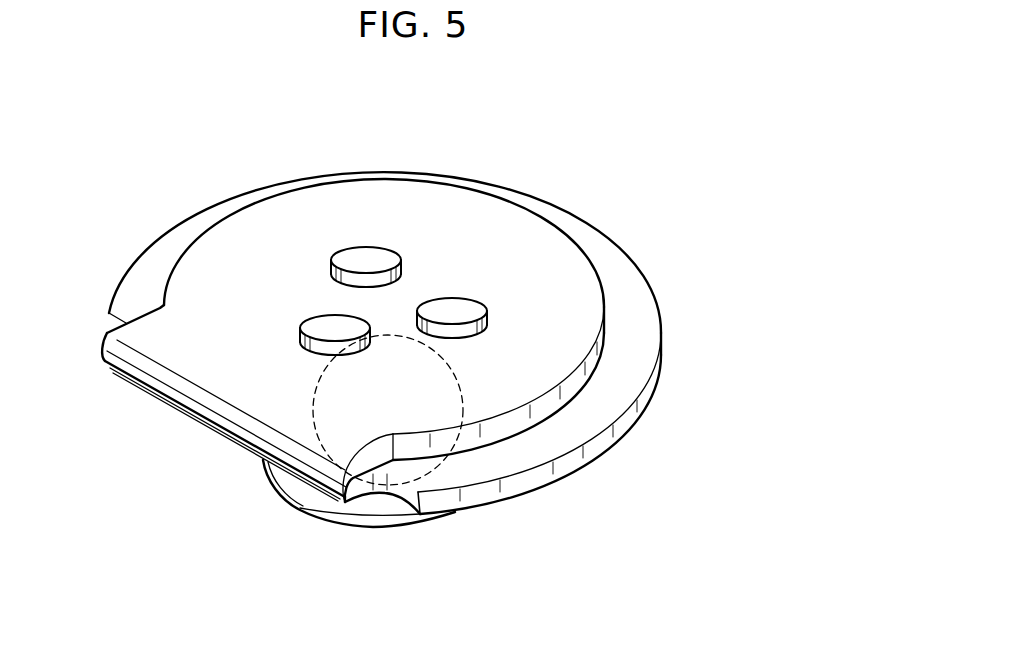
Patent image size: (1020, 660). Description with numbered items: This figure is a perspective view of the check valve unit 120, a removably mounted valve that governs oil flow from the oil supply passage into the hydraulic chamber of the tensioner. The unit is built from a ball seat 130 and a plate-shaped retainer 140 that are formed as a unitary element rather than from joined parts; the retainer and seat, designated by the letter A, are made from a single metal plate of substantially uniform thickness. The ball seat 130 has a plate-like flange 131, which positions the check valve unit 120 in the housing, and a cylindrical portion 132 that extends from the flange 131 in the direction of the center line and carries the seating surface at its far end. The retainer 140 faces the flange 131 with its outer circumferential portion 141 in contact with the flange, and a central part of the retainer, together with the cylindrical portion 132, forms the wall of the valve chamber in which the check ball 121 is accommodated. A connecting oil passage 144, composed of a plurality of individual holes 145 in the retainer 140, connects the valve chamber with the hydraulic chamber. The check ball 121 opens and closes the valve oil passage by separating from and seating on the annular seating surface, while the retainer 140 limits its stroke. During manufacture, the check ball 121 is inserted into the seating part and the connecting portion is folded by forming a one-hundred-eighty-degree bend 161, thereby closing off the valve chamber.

The check valve unit 120 is at (612, 184).
The check ball 121 is at (318, 378).
The ball seat 130 is at (598, 439).
The flange 131 is at (513, 457).
The cylindrical portion 132 is at (328, 506).
The retainer 140 is at (590, 372).
The outer circumferential portion 141 is at (427, 411).
The connecting oil passage 144 is at (484, 123).
The holes 145 is at (331, 325).
The 180° bend 161 is at (237, 434).
The retainer and seat A is at (191, 427).